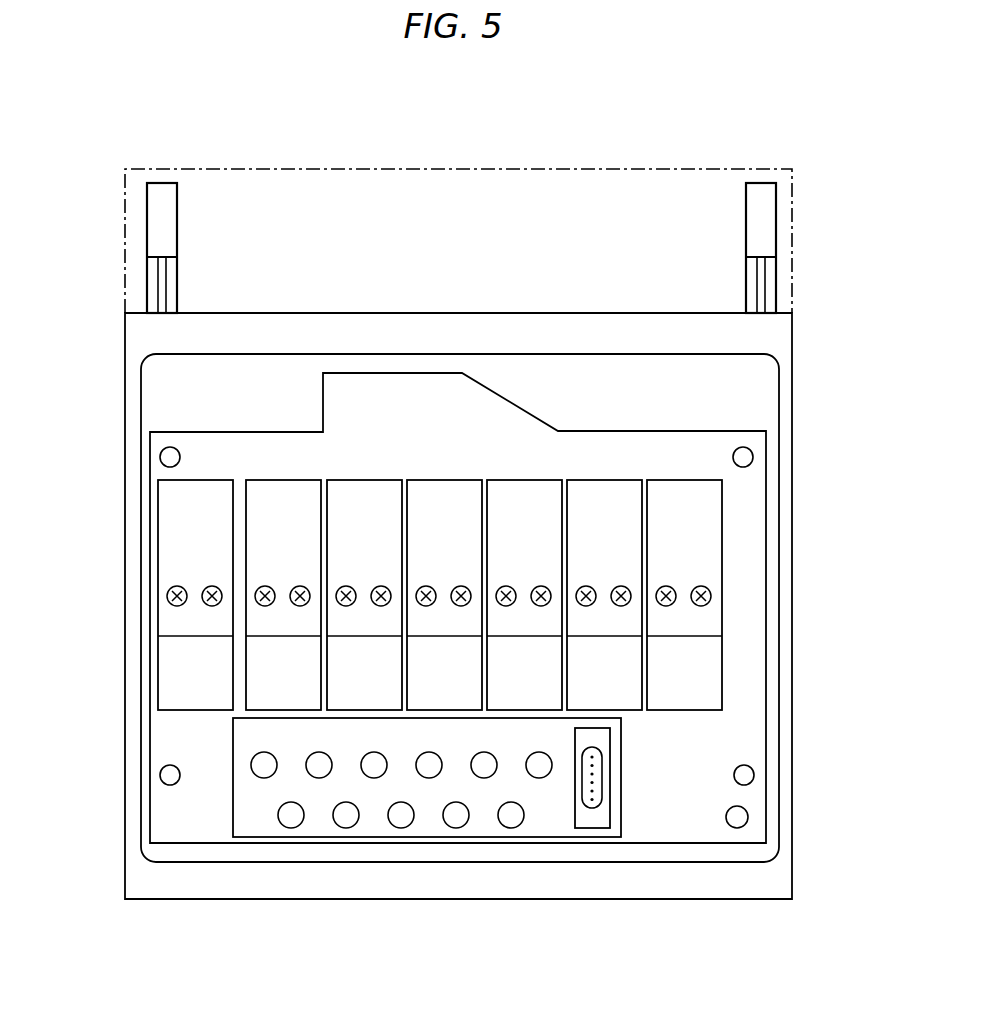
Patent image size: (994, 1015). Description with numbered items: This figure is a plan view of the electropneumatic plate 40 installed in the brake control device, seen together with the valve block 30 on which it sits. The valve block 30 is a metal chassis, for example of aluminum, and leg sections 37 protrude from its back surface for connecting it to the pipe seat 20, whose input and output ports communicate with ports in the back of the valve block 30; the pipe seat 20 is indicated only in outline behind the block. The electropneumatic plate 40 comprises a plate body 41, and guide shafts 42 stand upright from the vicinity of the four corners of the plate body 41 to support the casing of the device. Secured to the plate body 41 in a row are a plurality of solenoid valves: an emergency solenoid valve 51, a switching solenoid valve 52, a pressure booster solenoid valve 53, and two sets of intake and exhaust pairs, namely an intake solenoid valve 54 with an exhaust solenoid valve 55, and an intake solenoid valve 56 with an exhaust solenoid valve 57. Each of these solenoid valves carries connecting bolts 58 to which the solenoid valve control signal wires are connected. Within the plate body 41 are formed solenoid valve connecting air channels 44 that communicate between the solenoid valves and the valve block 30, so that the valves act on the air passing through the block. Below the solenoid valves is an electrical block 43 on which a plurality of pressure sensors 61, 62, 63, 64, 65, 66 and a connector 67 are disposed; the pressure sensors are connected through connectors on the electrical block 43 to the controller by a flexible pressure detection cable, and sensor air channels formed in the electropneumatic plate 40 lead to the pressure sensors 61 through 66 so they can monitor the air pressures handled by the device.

The pipe seat 20 is at (688, 165).
The valve block 30 is at (806, 340).
The leg sections 37 is at (153, 240).
The electropneumatic plate 40 is at (140, 338).
The plate body 41 is at (755, 685).
The guide shafts 42 is at (162, 457).
The electrical block 43 is at (555, 825).
The solenoid valve connecting air channels 44 is at (746, 817).
The emergency solenoid valve 51 is at (443, 494).
The switching solenoid valve 52 is at (376, 492).
The pressure booster solenoid valve 53 is at (683, 487).
The intake solenoid valve 54 is at (279, 488).
The exhaust solenoid valve 55 is at (196, 486).
The intake solenoid valve 56 is at (520, 488).
The exhaust solenoid valve 57 is at (603, 486).
The connecting bolts 58 is at (168, 596).
The pressure sensor 61 is at (484, 772).
The pressure sensor 62 is at (539, 772).
The pressure sensor 63 is at (264, 772).
The pressure sensor 64 is at (319, 772).
The pressure sensor 65 is at (374, 772).
The pressure sensor 66 is at (429, 772).
The connector 67 is at (591, 810).